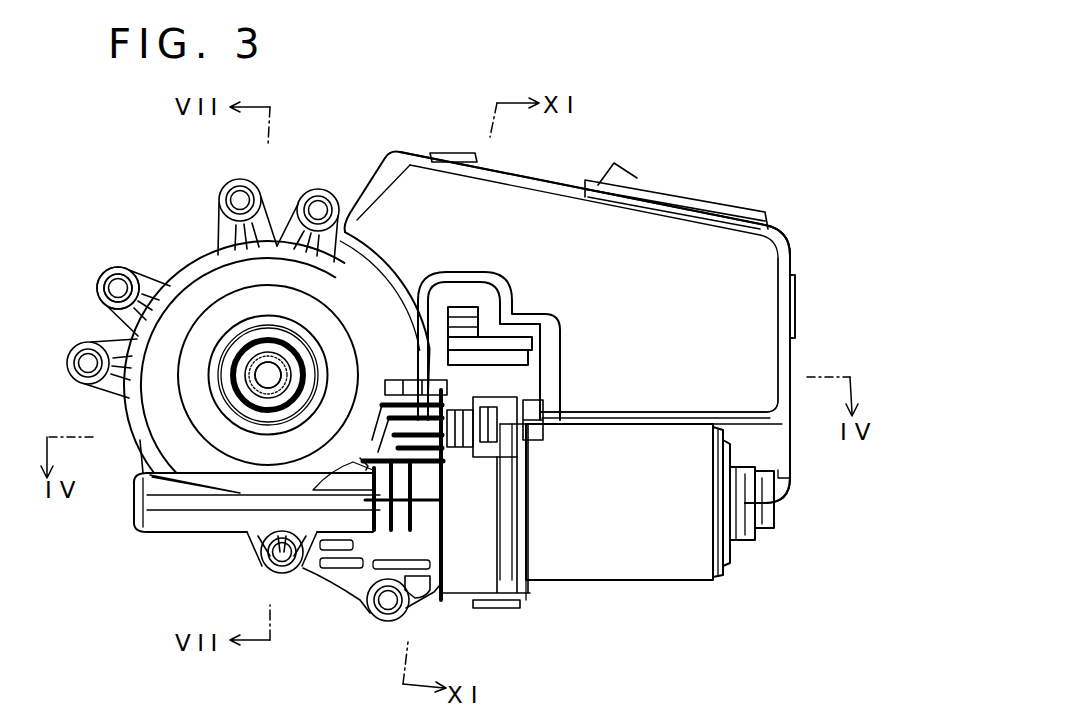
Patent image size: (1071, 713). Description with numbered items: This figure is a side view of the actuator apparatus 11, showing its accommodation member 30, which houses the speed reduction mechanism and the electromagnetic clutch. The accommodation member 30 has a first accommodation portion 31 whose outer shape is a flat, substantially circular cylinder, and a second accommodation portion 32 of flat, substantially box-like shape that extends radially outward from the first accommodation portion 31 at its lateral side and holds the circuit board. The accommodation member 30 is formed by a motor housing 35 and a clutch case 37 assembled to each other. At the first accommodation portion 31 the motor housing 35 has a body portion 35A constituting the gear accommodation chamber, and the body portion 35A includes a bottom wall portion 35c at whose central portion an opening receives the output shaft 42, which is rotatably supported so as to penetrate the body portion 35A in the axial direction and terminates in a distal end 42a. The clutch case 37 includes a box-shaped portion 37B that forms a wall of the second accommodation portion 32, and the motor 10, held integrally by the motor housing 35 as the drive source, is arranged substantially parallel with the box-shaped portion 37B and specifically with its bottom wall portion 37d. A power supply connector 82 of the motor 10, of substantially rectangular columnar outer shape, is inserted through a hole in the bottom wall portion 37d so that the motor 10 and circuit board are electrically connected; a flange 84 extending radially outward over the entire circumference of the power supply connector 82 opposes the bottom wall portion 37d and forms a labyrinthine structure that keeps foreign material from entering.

The actuator apparatus 11 is at (122, 118).
The motor 10 is at (718, 580).
The accommodation member 30 is at (95, 277).
The first accommodation portion 31 is at (183, 255).
The second accommodation portion 32 is at (792, 345).
The motor housing 35 is at (95, 277).
The body portion 35A is at (183, 255).
The bottom wall portion 35c is at (198, 421).
The clutch case 37 is at (790, 470).
The box-shaped portion 37B is at (792, 345).
The bottom wall portion 37d is at (660, 232).
The output shaft 42 is at (268, 382).
The distal end 42a is at (268, 382).
The power supply connector 82 is at (460, 307).
The flange 84 is at (483, 298).